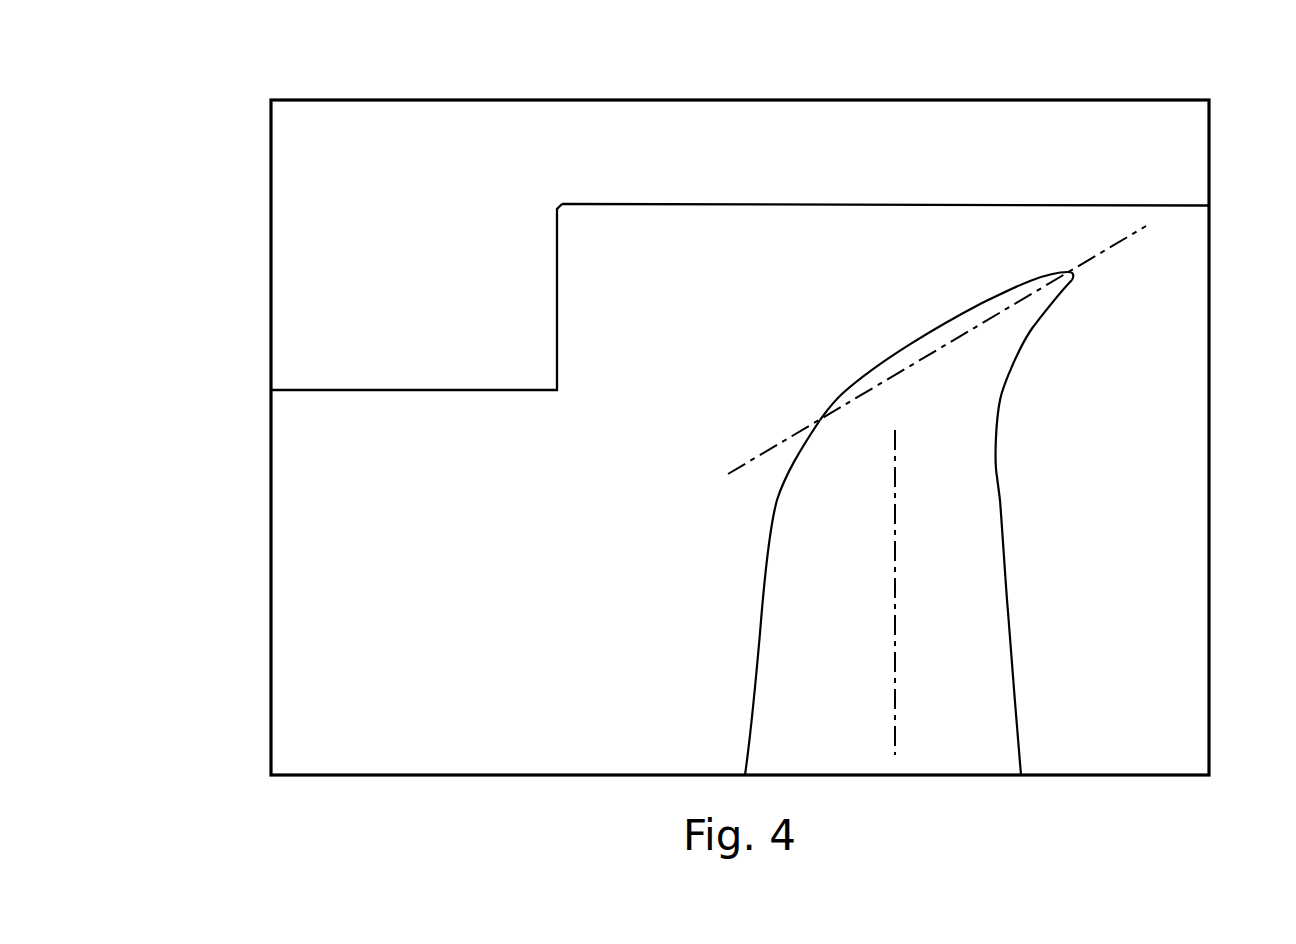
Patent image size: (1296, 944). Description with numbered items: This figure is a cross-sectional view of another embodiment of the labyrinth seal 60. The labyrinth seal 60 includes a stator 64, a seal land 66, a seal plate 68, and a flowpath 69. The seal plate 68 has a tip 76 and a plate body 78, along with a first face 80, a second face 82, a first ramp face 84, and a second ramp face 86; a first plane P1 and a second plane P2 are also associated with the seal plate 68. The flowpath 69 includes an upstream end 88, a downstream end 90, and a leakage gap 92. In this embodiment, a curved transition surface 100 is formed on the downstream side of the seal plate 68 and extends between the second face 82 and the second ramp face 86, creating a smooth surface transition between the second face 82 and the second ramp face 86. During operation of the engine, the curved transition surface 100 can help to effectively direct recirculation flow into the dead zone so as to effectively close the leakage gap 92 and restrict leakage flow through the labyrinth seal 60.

The labyrinth seal 60 is at (298, 528).
The stator 64 is at (327, 138).
The seal land 66 is at (885, 177).
The seal plate 68 is at (953, 497).
The flowpath 69 is at (1110, 526).
The tip 76 is at (1074, 277).
The plate body 78 is at (966, 704).
The first face 80 is at (1008, 612).
The second face 82 is at (758, 633).
The first ramp face 84 is at (1026, 335).
The second ramp face 86 is at (982, 302).
The upstream end 88 is at (1163, 466).
The downstream end 90 is at (335, 624).
The leakage gap 92 is at (1048, 232).
The curved transition surface 100 is at (832, 407).
The first plane P1 is at (895, 490).
The second plane P2 is at (750, 460).